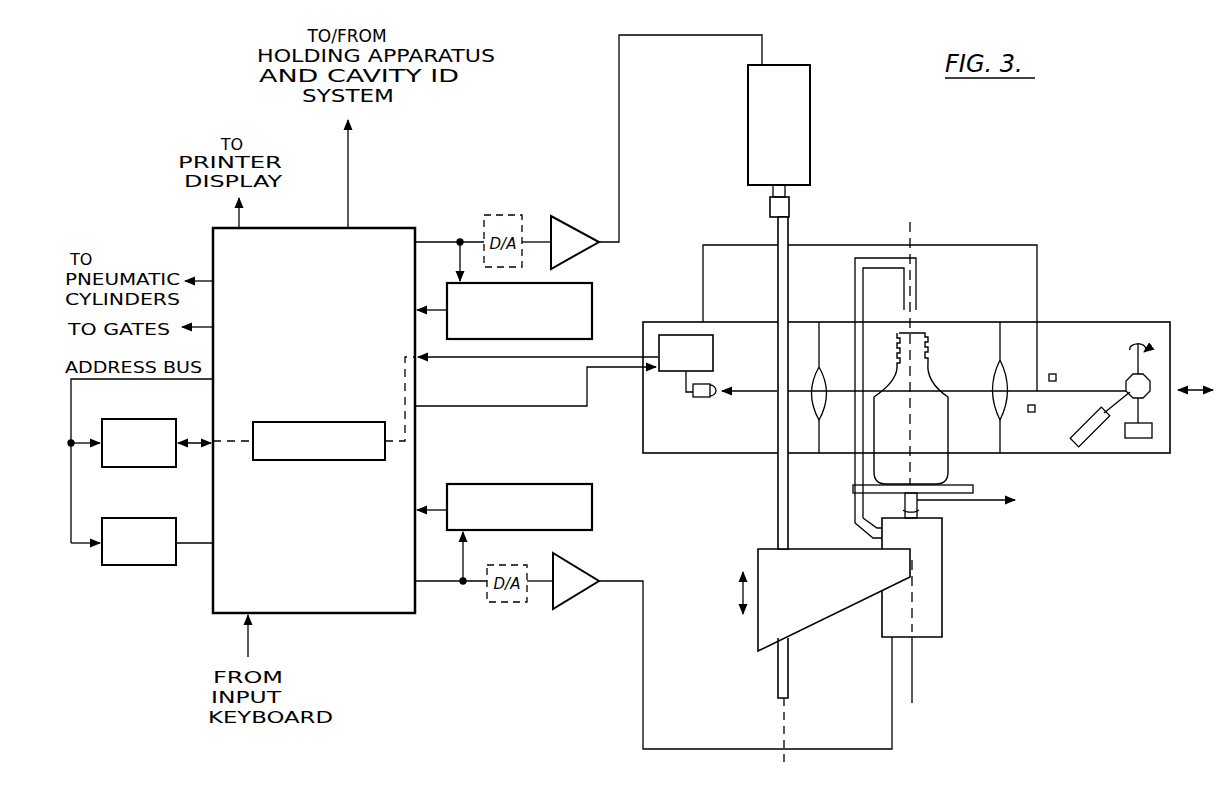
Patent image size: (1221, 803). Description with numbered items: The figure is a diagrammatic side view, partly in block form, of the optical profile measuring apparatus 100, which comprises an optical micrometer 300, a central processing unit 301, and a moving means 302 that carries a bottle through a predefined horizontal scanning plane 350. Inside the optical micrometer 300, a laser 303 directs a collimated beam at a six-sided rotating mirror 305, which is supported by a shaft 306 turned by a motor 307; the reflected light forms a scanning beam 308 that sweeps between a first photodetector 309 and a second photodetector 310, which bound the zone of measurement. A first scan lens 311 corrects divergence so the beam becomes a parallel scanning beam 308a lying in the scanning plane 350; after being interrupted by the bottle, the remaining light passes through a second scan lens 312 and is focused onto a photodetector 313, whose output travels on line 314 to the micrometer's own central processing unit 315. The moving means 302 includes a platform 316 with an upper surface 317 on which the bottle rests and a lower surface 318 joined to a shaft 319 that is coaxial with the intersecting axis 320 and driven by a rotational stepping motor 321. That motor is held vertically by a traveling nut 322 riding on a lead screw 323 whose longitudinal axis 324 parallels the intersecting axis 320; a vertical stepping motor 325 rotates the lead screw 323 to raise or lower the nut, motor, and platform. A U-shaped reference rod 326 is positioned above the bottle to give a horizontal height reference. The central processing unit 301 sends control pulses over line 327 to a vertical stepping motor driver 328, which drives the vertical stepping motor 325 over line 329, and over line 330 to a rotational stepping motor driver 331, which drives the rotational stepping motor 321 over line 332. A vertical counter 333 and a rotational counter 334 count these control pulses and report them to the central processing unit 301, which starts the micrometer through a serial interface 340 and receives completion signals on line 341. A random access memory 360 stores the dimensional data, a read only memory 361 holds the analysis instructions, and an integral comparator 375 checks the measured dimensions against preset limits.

The optical profile measuring apparatus 100 is at (136, 160).
The optical micrometer 300 is at (1148, 322).
The central processing unit 301 is at (388, 228).
The moving means 302 is at (757, 497).
The laser 303 is at (1098, 450).
The rotating mirror 305 is at (1152, 381).
The shaft 306 is at (1155, 368).
The motor 307 is at (1152, 433).
The scanning beam 308 is at (1082, 388).
The scanning beam 308a is at (975, 388).
The first photodetector 309 is at (1031, 412).
The second photodetector 310 is at (1052, 374).
The first scan lens 311 is at (1007, 366).
The second scan lens 312 is at (820, 336).
The photodetector 313 is at (700, 398).
The line 314 is at (669, 395).
The central processing unit of optical micrometer 315 is at (678, 335).
The platform 316 is at (975, 493).
The upper surface 317 is at (965, 486).
The lower surface 318 is at (855, 500).
The shaft 319 is at (903, 500).
The intersecting axis 320 is at (914, 683).
The rotational stepping motor 321 is at (942, 625).
The traveling nut 322 is at (832, 593).
The lead screw 323 is at (790, 673).
The longitudinal axis 324 is at (787, 728).
The vertical stepping motor 325 is at (812, 140).
The rod 326 is at (892, 258).
The line 327 is at (437, 242).
The vertical stepping motor driver 328 is at (572, 230).
The line 329 is at (619, 142).
The line 330 is at (437, 587).
The rotational stepping motor driver 331 is at (578, 560).
The line 332 is at (643, 700).
The vertical counter 333 is at (594, 290).
The rotational counter 334 is at (592, 508).
The serial interface 340 is at (493, 406).
The line 341 is at (497, 357).
The scanning plane 350 is at (1190, 398).
The random access memory 360 is at (132, 419).
The read only memory 361 is at (131, 567).
The comparator 375 is at (330, 461).